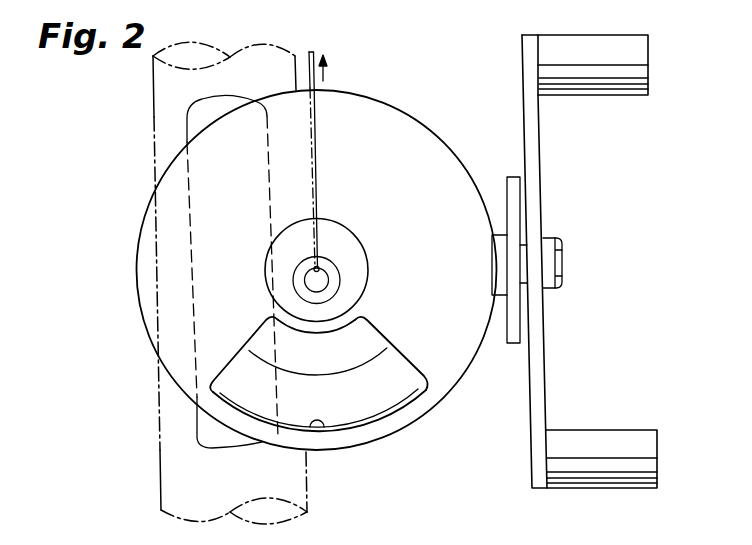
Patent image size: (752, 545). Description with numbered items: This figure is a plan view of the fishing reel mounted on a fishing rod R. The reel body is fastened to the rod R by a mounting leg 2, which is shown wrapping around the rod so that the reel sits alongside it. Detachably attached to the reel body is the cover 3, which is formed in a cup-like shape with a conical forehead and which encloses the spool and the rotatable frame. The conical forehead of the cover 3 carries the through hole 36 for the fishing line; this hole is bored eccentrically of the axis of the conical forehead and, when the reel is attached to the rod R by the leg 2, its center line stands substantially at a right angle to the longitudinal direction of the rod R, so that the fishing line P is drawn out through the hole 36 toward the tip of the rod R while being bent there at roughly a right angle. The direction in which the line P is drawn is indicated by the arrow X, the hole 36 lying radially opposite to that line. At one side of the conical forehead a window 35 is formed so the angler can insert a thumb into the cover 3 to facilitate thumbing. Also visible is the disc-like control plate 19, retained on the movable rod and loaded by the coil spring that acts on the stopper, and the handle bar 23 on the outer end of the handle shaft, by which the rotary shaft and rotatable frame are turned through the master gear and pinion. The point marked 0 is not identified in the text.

The mounting leg 2 is at (223, 437).
The cover 3 is at (173, 342).
The control plate 19 is at (353, 360).
The handle bar 23 is at (533, 149).
The window 35 is at (322, 433).
The through hole 36 is at (327, 278).
The center of rotation 0 is at (319, 267).
The fishing rod R is at (153, 115).
The fishing line P is at (318, 131).
The arrow X is at (333, 61).